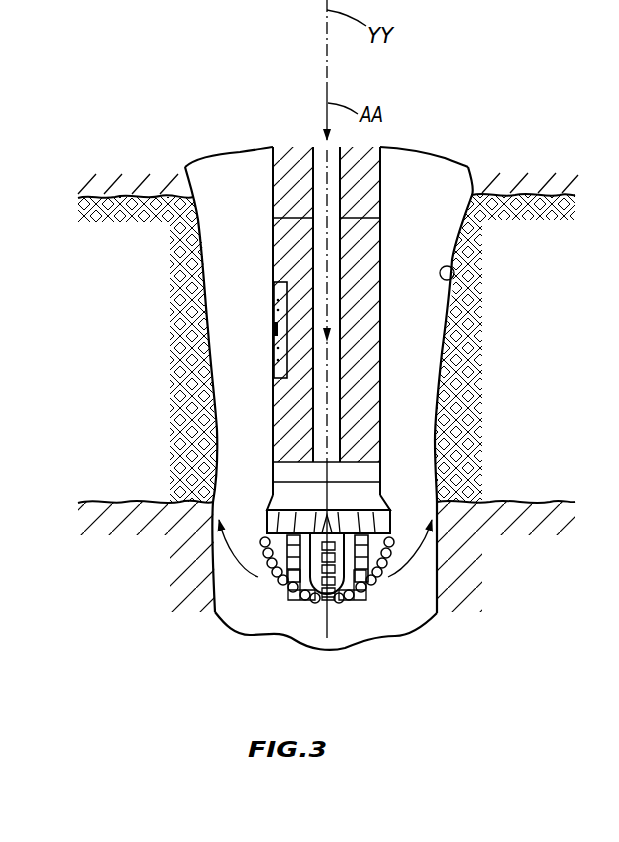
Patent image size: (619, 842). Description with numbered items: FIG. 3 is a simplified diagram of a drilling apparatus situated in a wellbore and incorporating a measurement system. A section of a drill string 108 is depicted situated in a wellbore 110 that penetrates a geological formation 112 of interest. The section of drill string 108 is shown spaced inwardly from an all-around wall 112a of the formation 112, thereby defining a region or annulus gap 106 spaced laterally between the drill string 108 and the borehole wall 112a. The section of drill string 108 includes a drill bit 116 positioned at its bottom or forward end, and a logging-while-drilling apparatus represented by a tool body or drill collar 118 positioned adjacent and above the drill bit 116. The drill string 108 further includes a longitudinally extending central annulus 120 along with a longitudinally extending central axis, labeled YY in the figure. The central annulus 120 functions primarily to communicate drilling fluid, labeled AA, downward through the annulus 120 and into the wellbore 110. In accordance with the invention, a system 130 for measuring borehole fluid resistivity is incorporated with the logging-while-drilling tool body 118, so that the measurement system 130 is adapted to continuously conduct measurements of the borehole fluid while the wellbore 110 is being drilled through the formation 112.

The annulus gap 106 is at (427, 341).
The drill string 108 is at (388, 296).
The wellbore 110 is at (226, 115).
The geological formation 112 is at (125, 332).
The borehole wall 112a is at (188, 166).
The drill bit 116 is at (362, 598).
The tool body or drill collar 118 is at (293, 241).
The central annulus 120 is at (334, 245).
The system for measuring borehole fluid resistivity 130 is at (266, 318).